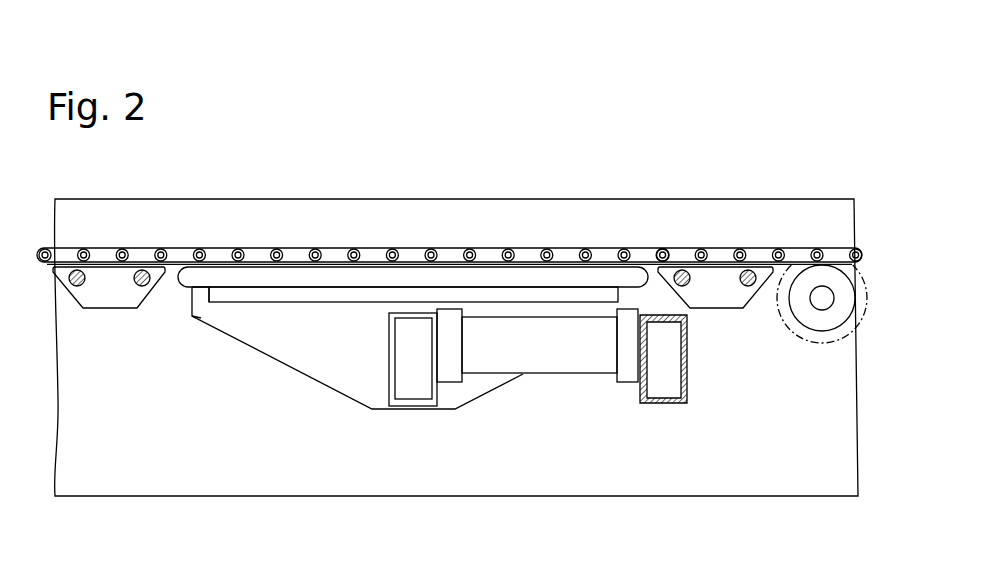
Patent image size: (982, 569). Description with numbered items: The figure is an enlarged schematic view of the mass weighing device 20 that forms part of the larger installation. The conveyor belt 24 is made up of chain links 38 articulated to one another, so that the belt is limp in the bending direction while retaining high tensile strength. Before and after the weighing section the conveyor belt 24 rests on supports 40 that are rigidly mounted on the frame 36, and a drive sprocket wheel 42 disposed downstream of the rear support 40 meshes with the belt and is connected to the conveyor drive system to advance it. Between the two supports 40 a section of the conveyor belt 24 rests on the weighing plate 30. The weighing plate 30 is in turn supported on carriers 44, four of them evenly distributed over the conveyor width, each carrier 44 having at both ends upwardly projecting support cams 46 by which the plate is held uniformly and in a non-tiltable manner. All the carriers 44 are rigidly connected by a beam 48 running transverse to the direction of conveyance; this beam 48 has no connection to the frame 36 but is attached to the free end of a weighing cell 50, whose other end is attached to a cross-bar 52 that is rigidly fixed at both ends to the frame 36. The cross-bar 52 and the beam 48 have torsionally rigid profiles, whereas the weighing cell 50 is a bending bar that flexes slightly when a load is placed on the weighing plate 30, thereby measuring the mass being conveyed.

The conveyor device 20 is at (489, 178).
The conveyor belt 24 is at (520, 245).
The weighing plate 30 is at (339, 275).
The frame 36 is at (205, 465).
The chain link 38 is at (682, 252).
The support 40 is at (107, 297).
The drive sprocket wheel 42 is at (825, 323).
The carrier 44 is at (320, 367).
The support cam 46 is at (202, 298).
The beam 48 is at (413, 405).
The weighing cell 50 is at (545, 362).
The cross-bar 52 is at (660, 405).